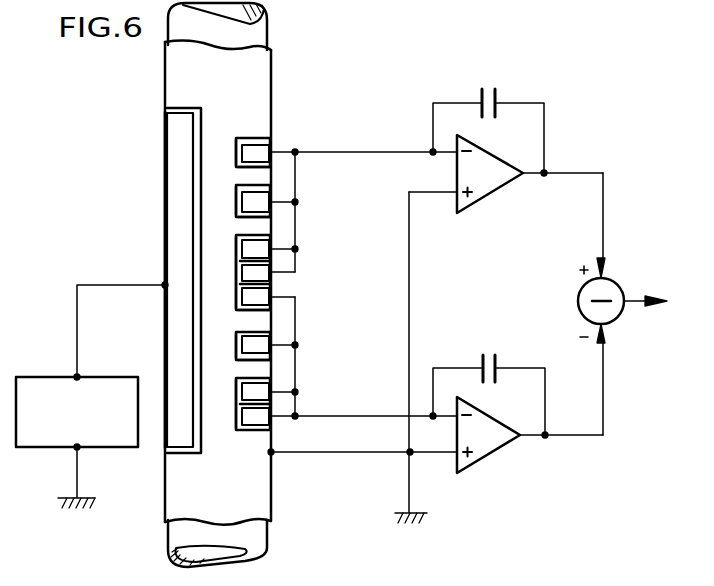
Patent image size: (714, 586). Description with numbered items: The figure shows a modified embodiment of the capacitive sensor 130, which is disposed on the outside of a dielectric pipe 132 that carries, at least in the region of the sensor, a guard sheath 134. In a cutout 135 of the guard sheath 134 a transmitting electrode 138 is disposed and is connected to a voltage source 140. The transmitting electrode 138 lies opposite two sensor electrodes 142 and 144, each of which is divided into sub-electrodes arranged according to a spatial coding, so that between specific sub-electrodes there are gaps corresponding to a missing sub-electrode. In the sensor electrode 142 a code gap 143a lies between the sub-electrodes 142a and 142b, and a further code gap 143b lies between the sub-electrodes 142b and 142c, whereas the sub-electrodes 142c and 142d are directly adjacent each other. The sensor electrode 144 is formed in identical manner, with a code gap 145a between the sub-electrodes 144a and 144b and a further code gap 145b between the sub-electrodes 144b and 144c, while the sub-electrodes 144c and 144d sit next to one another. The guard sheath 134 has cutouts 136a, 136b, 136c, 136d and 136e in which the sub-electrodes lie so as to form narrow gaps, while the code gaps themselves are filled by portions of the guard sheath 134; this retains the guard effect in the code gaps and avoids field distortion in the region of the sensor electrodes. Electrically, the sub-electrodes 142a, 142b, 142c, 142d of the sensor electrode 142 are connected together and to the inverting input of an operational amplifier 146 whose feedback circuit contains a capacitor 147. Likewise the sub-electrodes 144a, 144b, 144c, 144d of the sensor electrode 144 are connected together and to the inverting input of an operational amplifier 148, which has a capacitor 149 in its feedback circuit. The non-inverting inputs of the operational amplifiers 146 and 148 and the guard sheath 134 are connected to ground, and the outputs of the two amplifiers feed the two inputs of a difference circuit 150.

The capacitive sensor 130 is at (150, 149).
The dielectric pipe 132 is at (252, 33).
The guard sheath 134 is at (173, 79).
The cutout 135 is at (202, 112).
The cutout 136a is at (238, 135).
The cutout 136b is at (228, 200).
The cutout 136c is at (228, 242).
The cutout 136d is at (228, 340).
The cutout 136e is at (234, 436).
The transmitting electrode 138 is at (174, 257).
The voltage source 140 is at (42, 377).
The sensor electrode 142 is at (281, 128).
The sub-electrode 142a is at (271, 150).
The sub-electrode 142b is at (271, 199).
The sub-electrode 142c is at (271, 246).
The sub-electrode 142d is at (271, 270).
The code gap 143a is at (271, 174).
The code gap 143b is at (271, 225).
The sensor electrode 144 is at (281, 438).
The sub-electrode 144a is at (271, 293).
The sub-electrode 144b is at (271, 340).
The sub-electrode 144c is at (271, 388).
The sub-electrode 144d is at (272, 420).
The code gap 145a is at (271, 318).
The code gap 145b is at (271, 366).
The operational amplifier 146 is at (492, 184).
The capacitor 147 is at (497, 90).
The operational amplifier 148 is at (485, 452).
The capacitor 149 is at (497, 365).
The difference circuit 150 is at (618, 291).